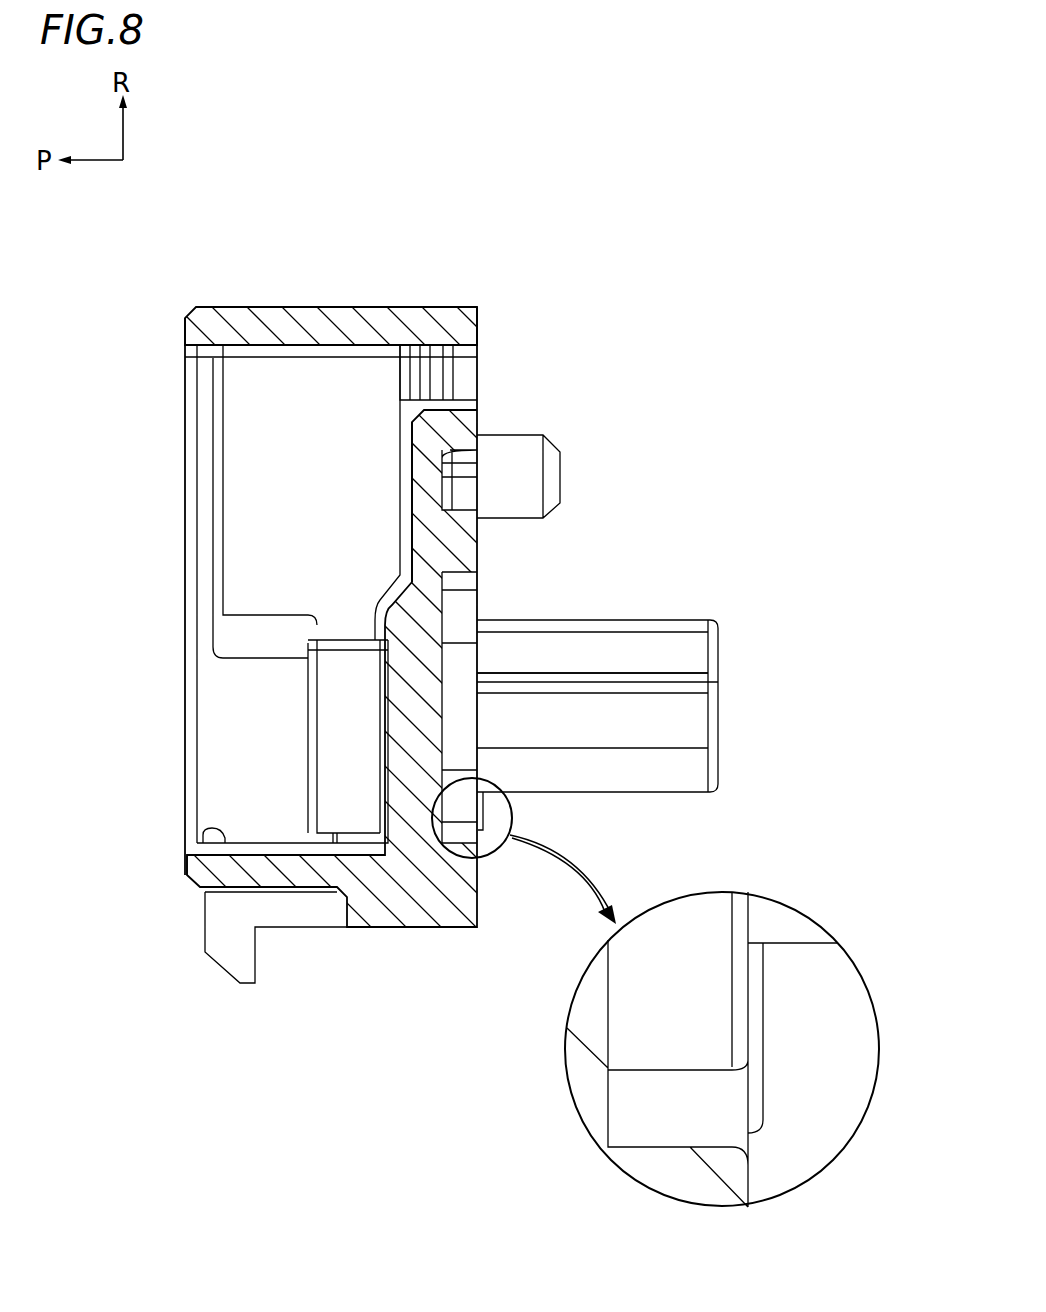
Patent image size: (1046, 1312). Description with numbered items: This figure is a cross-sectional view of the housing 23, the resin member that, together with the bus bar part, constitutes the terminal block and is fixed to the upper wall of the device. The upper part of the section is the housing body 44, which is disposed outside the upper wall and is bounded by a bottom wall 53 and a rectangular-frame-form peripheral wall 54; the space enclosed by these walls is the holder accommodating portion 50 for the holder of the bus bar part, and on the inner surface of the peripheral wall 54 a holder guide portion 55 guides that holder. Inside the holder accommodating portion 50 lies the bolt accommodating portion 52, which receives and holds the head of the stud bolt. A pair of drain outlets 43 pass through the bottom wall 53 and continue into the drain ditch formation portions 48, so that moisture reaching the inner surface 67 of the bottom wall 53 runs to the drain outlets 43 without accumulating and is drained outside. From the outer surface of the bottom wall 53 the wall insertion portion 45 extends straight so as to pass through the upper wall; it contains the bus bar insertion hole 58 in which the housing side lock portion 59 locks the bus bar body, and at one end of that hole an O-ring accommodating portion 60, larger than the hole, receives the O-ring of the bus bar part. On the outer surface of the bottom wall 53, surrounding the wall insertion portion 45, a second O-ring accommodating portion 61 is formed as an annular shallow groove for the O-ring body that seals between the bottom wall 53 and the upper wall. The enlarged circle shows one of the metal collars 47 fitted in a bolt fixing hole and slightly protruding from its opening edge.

The housing 23 is at (562, 184).
The housing body 44 is at (310, 312).
The drain ditch formation portions 48 is at (485, 347).
The drain outlets 43 is at (463, 374).
The peripheral wall 54 is at (480, 418).
The bolt accommodating portion 52 is at (213, 493).
The inner surface 67 is at (410, 530).
The bottom wall 53 is at (467, 545).
The wall insertion portion 45 is at (642, 640).
The O-ring accommodating portion 60 is at (345, 702).
The holder accommodating portion 50 is at (208, 750).
The holder guide portion 55 is at (225, 842).
The bus bar insertion hole 58 is at (673, 700).
The housing side lock portion 59 is at (625, 705).
The O-ring accommodating portion 61 is at (612, 1015).
The collars 47 is at (757, 1023).